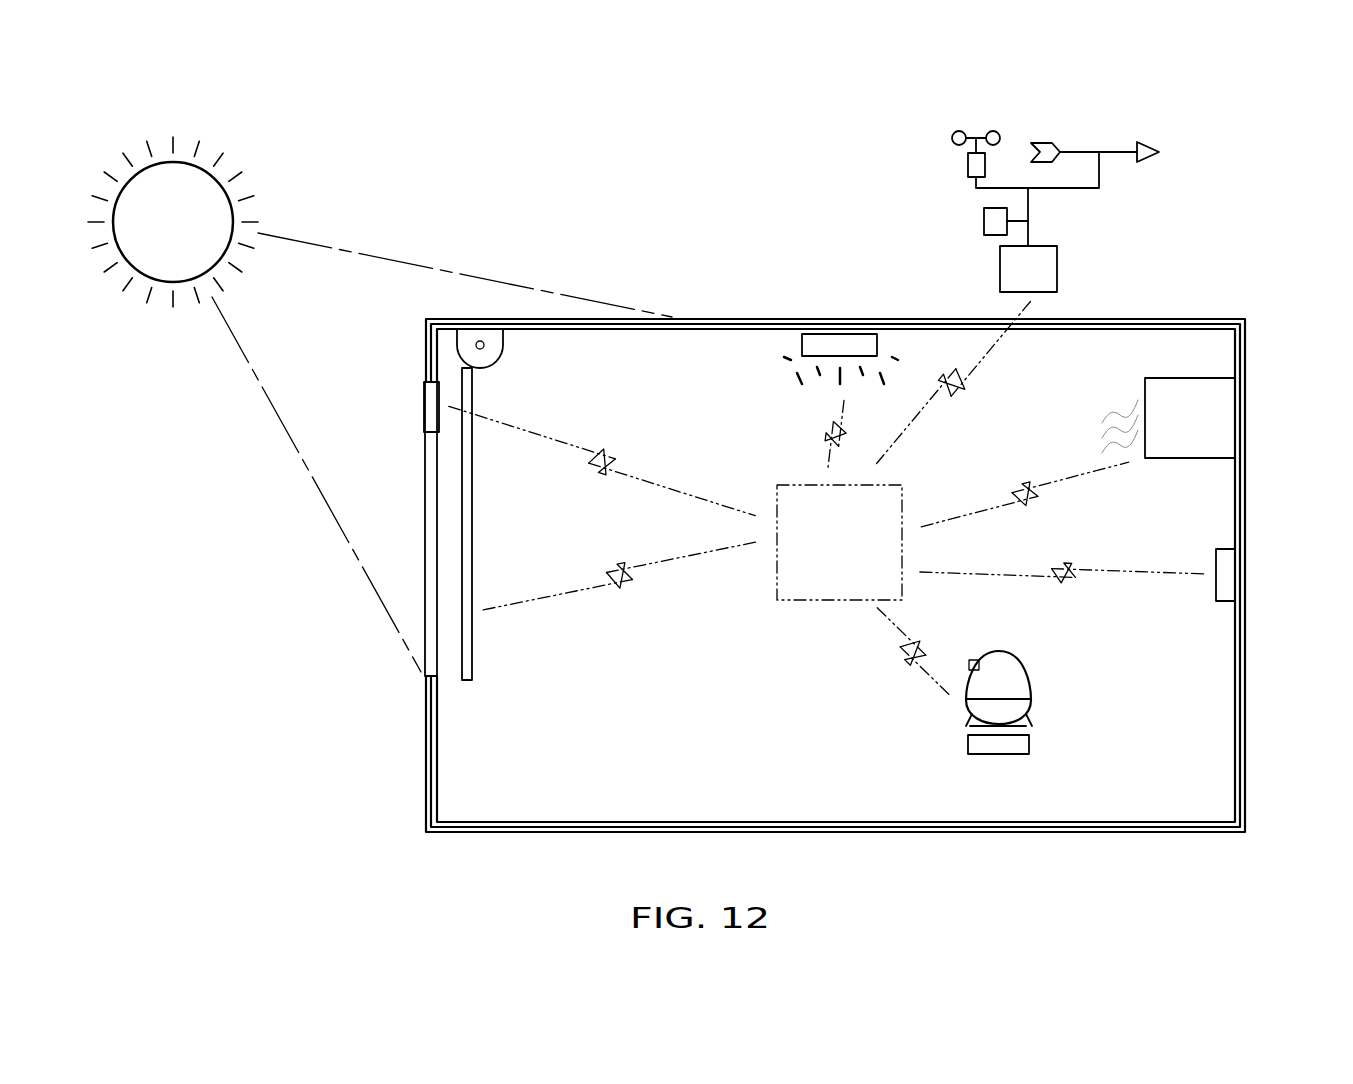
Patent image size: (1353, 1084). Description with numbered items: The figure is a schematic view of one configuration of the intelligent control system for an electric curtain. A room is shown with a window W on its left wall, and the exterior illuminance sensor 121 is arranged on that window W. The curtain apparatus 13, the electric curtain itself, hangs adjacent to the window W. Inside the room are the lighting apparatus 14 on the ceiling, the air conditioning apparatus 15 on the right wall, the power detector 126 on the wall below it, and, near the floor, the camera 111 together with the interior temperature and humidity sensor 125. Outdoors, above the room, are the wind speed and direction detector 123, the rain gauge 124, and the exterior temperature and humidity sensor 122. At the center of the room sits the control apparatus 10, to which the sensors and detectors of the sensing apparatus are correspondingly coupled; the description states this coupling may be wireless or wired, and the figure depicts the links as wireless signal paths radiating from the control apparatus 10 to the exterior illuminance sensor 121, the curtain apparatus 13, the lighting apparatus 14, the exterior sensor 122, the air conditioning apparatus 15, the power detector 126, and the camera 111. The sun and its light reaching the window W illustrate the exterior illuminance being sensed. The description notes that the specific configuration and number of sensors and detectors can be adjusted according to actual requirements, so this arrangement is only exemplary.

The control apparatus 10 is at (819, 600).
The curtain apparatus 13 is at (470, 558).
The lighting apparatus 14 is at (843, 342).
The air conditioning apparatus 15 is at (1187, 458).
The window W is at (431, 510).
The camera 111 is at (1014, 676).
The exterior illuminance sensor 121 is at (429, 408).
The exterior temperature and humidity sensor 122 is at (1000, 267).
The wind speed and direction detector 123 is at (1085, 140).
The rain gauge 124 is at (984, 221).
The interior temperature and humidity sensor 125 is at (1014, 745).
The power detector 126 is at (1229, 577).